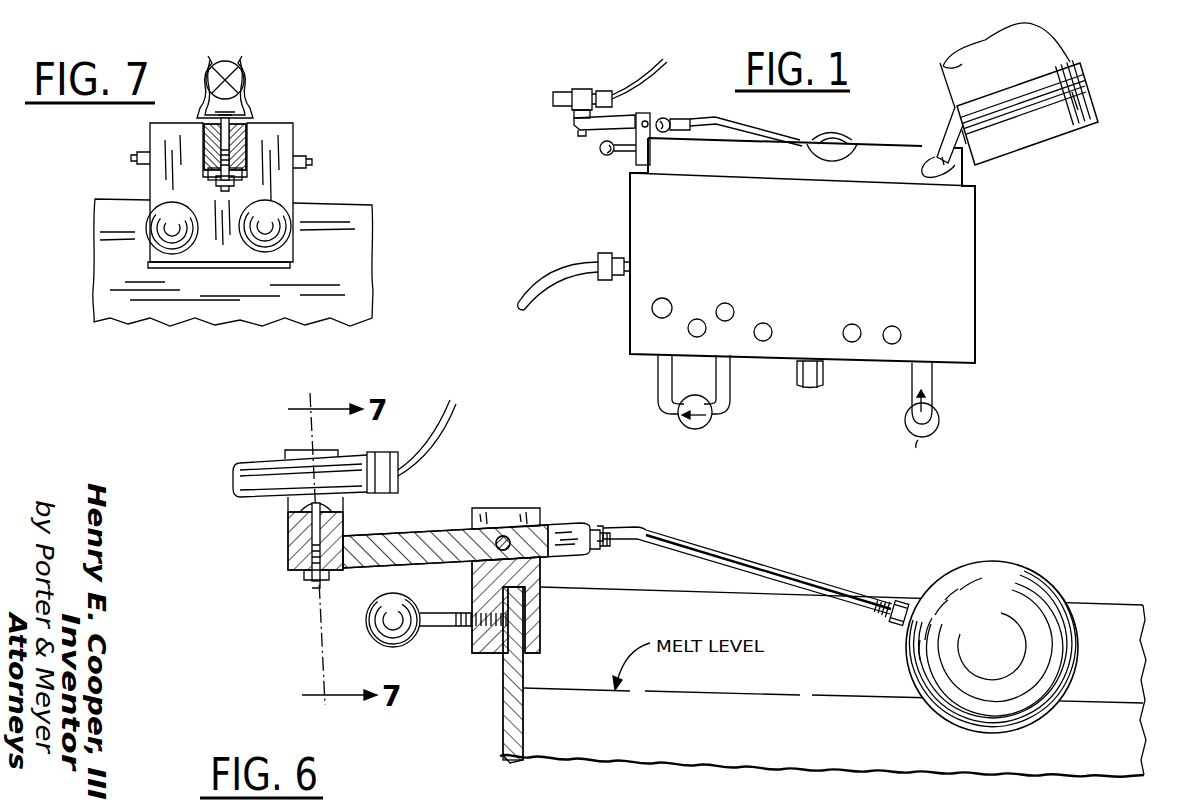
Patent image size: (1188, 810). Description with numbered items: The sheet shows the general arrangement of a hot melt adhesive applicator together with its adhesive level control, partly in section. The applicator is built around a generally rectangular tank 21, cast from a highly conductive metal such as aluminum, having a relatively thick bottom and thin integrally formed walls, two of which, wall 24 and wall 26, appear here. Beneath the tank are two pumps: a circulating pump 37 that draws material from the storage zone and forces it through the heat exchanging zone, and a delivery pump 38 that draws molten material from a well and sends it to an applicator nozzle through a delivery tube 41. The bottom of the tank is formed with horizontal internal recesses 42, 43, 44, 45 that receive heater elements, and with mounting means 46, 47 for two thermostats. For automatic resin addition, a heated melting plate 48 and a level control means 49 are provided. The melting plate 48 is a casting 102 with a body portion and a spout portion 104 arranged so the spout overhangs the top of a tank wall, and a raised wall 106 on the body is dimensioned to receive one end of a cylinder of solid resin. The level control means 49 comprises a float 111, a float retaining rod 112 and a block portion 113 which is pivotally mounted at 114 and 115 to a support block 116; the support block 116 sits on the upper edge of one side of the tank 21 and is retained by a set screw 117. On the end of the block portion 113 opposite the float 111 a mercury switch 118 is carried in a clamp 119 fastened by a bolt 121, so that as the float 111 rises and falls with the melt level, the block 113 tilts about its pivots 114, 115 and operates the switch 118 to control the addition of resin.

In FIG. 1, the tank 21 is at (1003, 265).
In FIG. 7, the wall 24 is at (348, 250).
In FIG. 6, the wall 24 is at (503, 722).
In FIG. 6, the wall 26 is at (598, 602).
In FIG. 1, the circulating pump 37 is at (937, 420).
In FIG. 1, the delivery pump 38 is at (700, 428).
In FIG. 1, the delivery tube 41 is at (571, 275).
In FIG. 1, the internal recess 42 is at (900, 330).
In FIG. 1, the internal recess 43 is at (858, 326).
In FIG. 1, the internal recess 44 is at (771, 327).
In FIG. 1, the internal recess 45 is at (706, 329).
In FIG. 1, the thermostat mounting means 46 is at (733, 305).
In FIG. 1, the thermostat mounting means 47 is at (670, 300).
In FIG. 1, the heated melting plate 48 is at (1102, 100).
In FIG. 1, the level control means 49 is at (653, 113).
In FIG. 1, the casting 102 is at (1036, 139).
In FIG. 1, the spout portion 104 is at (948, 140).
In FIG. 1, the raised wall 106 is at (1078, 80).
In FIG. 1, the float 111 is at (842, 130).
In FIG. 6, the float 111 is at (1032, 590).
In FIG. 1, the float retaining rod 112 is at (729, 131).
In FIG. 6, the float retaining rod 112 is at (705, 551).
In FIG. 7, the block portion 113 is at (236, 162).
In FIG. 6, the block portion 113 is at (578, 527).
In FIG. 7, the pivot 114 is at (312, 162).
In FIG. 7, the pivot 115 is at (140, 158).
In FIG. 6, the pivot 115 is at (505, 537).
In FIG. 7, the support block 116 is at (290, 133).
In FIG. 6, the support block 116 is at (485, 584).
In FIG. 7, the set screw 117 is at (160, 215).
In FIG. 7, the mercury switch 118 is at (227, 66).
In FIG. 1, the mercury switch 118 is at (560, 90).
In FIG. 6, the mercury switch 118 is at (252, 478).
In FIG. 7, the clamp 119 is at (248, 108).
In FIG. 6, the clamp 119 is at (292, 508).
In FIG. 7, the bolt 121 is at (218, 190).
In FIG. 6, the bolt 121 is at (305, 562).